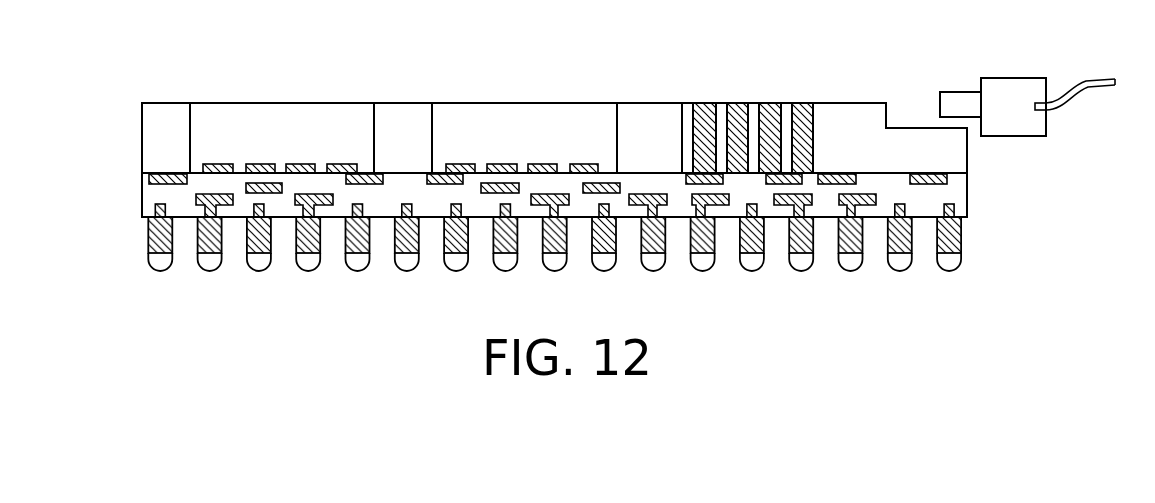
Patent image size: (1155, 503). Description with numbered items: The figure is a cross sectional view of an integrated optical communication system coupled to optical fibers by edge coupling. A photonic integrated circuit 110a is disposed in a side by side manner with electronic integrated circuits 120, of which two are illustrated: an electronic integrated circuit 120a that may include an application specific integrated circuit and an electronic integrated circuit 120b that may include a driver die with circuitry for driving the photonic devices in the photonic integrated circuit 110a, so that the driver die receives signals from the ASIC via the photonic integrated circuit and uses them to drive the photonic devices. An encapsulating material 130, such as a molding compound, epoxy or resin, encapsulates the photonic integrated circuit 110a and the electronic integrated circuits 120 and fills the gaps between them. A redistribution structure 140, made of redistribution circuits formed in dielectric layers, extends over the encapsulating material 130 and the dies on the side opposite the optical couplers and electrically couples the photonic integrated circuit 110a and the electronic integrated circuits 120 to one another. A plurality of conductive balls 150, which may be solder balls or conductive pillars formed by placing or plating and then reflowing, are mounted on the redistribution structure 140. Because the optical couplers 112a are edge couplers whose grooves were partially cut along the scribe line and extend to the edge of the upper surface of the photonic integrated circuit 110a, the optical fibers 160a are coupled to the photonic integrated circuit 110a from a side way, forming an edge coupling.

The electronic integrated circuit 120 is at (403, 101).
The electronic integrated circuit (ASIC) 120a is at (267, 117).
The electronic integrated circuit (driver die) 120b is at (487, 117).
The encapsulating material 130 is at (651, 113).
The photonic integrated circuit 110a is at (845, 113).
The optical coupler (edge coupler) 112a is at (888, 115).
The optical fiber 160a is at (1007, 77).
The redistribution structure 140 is at (962, 198).
The conductive ball 150 is at (955, 258).